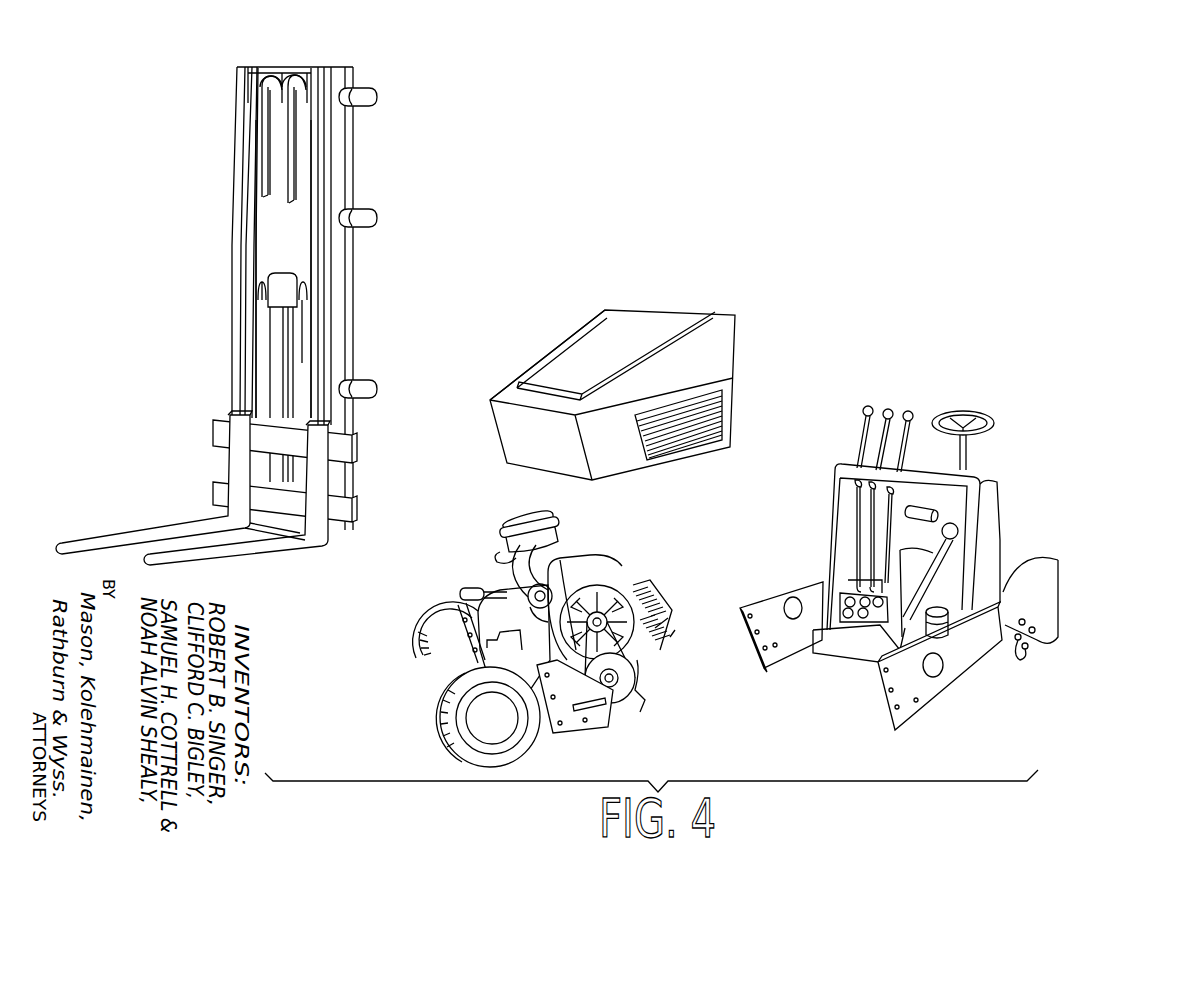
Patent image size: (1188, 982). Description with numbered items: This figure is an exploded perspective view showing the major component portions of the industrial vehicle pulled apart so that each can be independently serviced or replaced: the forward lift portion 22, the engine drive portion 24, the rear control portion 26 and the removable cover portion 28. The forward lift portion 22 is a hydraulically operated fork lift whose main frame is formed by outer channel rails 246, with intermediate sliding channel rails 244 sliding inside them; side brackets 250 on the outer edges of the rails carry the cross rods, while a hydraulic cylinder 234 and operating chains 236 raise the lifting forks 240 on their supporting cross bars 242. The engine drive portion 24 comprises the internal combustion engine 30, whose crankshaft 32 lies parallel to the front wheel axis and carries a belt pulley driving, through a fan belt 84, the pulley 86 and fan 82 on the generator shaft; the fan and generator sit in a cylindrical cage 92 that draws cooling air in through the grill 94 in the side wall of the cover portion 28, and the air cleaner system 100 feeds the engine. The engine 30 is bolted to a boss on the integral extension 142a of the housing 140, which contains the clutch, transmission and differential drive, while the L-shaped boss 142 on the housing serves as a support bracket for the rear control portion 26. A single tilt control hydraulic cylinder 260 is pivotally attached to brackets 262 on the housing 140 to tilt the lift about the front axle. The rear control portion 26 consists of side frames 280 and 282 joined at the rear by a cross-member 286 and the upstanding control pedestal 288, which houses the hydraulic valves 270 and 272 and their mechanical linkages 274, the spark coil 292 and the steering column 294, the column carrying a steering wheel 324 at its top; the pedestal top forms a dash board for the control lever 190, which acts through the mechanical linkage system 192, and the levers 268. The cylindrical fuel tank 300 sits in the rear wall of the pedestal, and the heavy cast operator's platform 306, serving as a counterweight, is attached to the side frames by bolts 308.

The forward lift portion 22 is at (246, 333).
The engine drive portion 24 is at (655, 700).
The rear control portion 26 is at (945, 555).
The removable cover portion 28 is at (645, 395).
The internal combustion engine 30 is at (666, 641).
The crankshaft 32 is at (616, 678).
The fan 82 is at (608, 598).
The fan belt 84 is at (635, 656).
The pulley 86 is at (645, 586).
The cylindrical cage 92 is at (588, 572).
The grill 94 is at (707, 415).
The air cleaner system 100 is at (537, 637).
The housing 140 is at (481, 639).
The L-shaped boss 142 is at (570, 725).
The integral extension 142a is at (585, 712).
The control lever 190 is at (908, 411).
The mechanical linkage system 192 is at (895, 532).
The hydraulic cylinder 234 is at (280, 340).
The operating chains 236 is at (288, 172).
The lifting forks 240 is at (173, 558).
The supporting cross bars 242 is at (350, 510).
The intermediate sliding channel rails 244 is at (311, 280).
The outer channel rails 246 is at (345, 361).
The side brackets 250 is at (385, 390).
The tilt control hydraulic cylinder 260 is at (520, 574).
The brackets 262 is at (462, 598).
The levers 268 is at (880, 440).
The hydraulic valve 270 is at (848, 600).
The hydraulic valve 272 is at (866, 620).
The mechanical linkages 274 is at (855, 505).
The side frame 280 is at (748, 655).
The side frame 282 is at (913, 722).
The cross-member 286 is at (862, 660).
The control pedestal 288 is at (994, 547).
The spark coil 292 is at (935, 510).
The steering column 294 is at (966, 472).
The fuel tank 300 is at (933, 588).
The operator's platform 306 is at (1039, 570).
The bolts 308 is at (1025, 648).
The steering wheel 324 is at (978, 415).